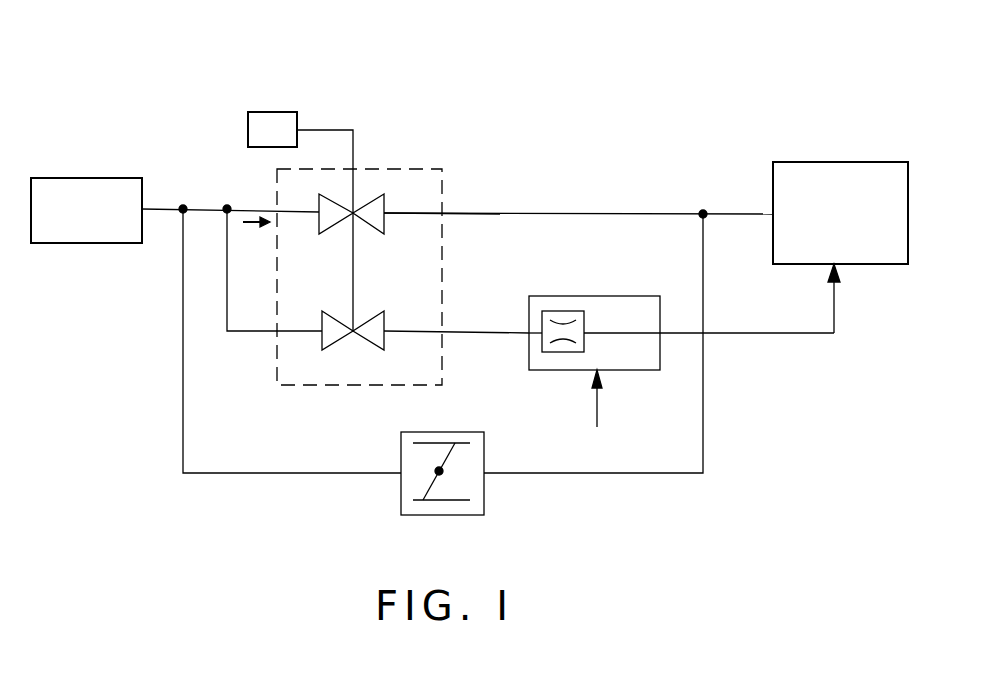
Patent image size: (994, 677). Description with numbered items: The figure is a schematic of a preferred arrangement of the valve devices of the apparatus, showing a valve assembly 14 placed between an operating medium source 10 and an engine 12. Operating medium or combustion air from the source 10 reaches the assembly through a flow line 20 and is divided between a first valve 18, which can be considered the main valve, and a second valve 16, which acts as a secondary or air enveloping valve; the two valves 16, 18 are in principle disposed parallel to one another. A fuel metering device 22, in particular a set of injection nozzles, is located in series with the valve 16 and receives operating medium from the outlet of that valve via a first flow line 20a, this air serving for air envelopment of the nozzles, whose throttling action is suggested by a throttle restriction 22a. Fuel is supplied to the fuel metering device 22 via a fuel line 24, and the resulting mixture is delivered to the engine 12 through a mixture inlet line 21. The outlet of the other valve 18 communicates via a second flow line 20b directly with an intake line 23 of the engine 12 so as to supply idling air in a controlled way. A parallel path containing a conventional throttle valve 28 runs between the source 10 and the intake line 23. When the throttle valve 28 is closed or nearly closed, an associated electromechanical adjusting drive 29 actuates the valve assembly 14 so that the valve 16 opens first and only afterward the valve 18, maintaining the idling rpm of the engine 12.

The operating medium source 10 is at (93, 178).
The engine 12 is at (822, 162).
The valve assembly 14 is at (445, 172).
The second valve 16 is at (384, 338).
The first valve 18 is at (384, 224).
The flow line 20 is at (245, 208).
The first flow line 20a is at (505, 333).
The second flow line 20b is at (505, 215).
The mixture inlet line 21 is at (834, 305).
The fuel metering device 22 is at (645, 370).
The throttle restriction 22a is at (584, 318).
The intake line 23 is at (162, 212).
The fuel line 24 is at (597, 413).
The throttle valve 28 is at (484, 497).
The adjusting drive 29 is at (267, 112).